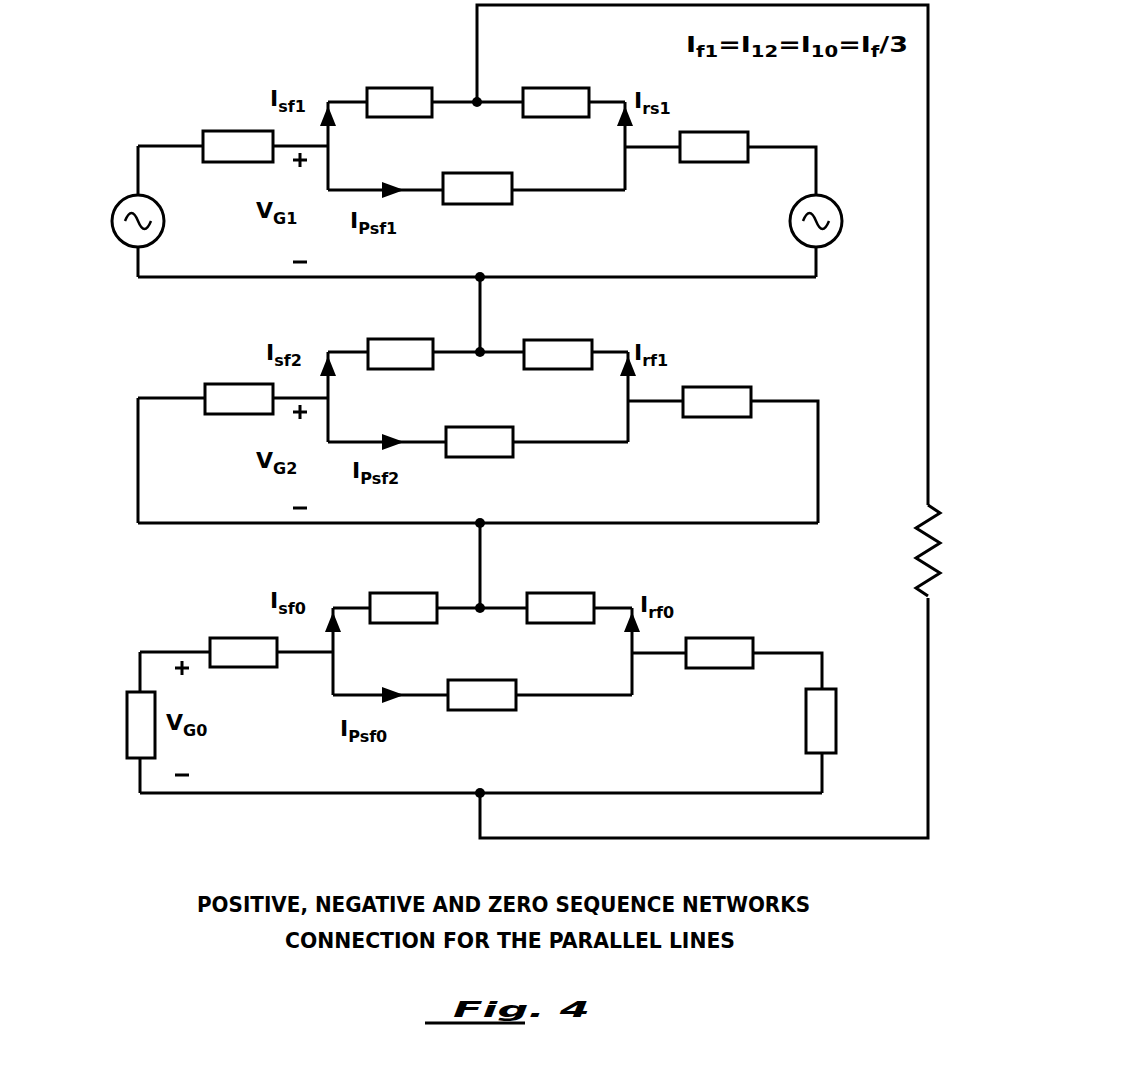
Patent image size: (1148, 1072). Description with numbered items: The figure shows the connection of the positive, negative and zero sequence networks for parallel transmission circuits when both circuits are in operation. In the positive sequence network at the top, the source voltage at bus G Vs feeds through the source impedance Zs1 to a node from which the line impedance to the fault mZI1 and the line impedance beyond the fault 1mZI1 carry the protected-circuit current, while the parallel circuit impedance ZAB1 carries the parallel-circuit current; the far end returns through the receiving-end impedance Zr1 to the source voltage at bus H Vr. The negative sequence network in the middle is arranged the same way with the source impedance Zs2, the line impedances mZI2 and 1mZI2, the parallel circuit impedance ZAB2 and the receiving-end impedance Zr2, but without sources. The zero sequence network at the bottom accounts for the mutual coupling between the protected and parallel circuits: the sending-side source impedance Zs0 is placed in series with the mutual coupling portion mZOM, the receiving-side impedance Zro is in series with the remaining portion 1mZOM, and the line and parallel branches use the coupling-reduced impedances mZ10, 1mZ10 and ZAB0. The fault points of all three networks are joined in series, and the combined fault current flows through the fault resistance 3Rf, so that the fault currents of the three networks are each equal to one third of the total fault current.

The fault resistance 3Rf is at (902, 550).
The source voltage at bus G Vs is at (134, 202).
The source voltage at bus H Vr is at (822, 206).
The positive sequence source impedance Zs1 is at (218, 129).
The positive sequence line impedance to fault mZI1 is at (395, 85).
The positive sequence line impedance beyond fault 1mZI1 is at (553, 85).
The positive sequence parallel circuit impedance ZAB1 is at (477, 204).
The positive sequence receiving-end impedance Zr1 is at (735, 133).
The negative sequence source impedance Zs2 is at (209, 383).
The negative sequence line impedance to fault mZI2 is at (399, 337).
The negative sequence line impedance beyond fault 1mZI2 is at (565, 337).
The negative sequence parallel circuit impedance ZAB2 is at (479, 457).
The negative sequence receiving-end impedance Zr2 is at (738, 387).
The zero sequence source impedance Zs0 is at (117, 700).
The zero sequence mutual coupling to fault mZOM is at (224, 631).
The modified zero sequence line impedance to fault mZ10 is at (384, 582).
The modified zero sequence line impedance beyond fault 1mZ10 is at (599, 582).
The modified zero sequence parallel circuit impedance ZAB0 is at (529, 713).
The zero sequence mutual coupling beyond fault 1mZOM is at (760, 637).
The zero sequence receiving-end impedance Zro is at (796, 721).